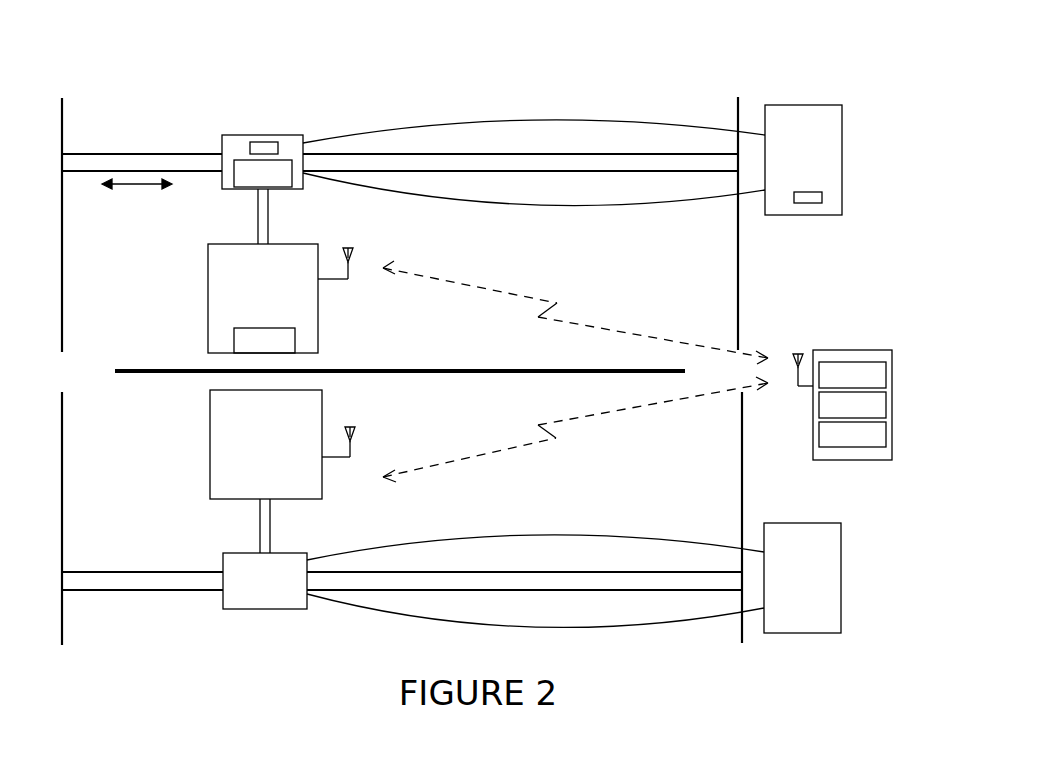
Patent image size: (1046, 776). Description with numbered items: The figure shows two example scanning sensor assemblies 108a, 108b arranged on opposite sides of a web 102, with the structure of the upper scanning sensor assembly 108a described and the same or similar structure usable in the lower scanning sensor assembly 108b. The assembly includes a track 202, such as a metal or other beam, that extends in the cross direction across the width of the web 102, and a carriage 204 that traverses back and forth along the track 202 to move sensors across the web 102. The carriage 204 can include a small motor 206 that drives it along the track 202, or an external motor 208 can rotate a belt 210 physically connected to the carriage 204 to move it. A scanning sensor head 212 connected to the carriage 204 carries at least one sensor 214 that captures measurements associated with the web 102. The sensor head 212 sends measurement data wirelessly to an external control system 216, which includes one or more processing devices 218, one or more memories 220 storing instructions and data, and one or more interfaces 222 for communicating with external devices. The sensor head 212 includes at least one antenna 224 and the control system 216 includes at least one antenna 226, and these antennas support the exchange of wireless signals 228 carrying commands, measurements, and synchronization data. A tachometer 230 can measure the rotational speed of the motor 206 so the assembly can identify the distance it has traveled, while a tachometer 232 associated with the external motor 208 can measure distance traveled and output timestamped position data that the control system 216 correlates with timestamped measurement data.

The web 102 is at (175, 375).
The scanning sensor assembly 108a is at (720, 90).
The scanning sensor assembly 108b is at (238, 638).
The track 202 is at (80, 153).
The carriage 204 is at (297, 133).
The motor 206 is at (263, 173).
The external motor 208 is at (836, 160).
The belt 210 is at (482, 120).
The scanning sensor head 212 is at (245, 309).
The sensor 214 is at (264, 340).
The control system 216 is at (851, 350).
The processing device 218 is at (852, 375).
The memory 220 is at (852, 405).
The interface 222 is at (852, 434).
The antenna 224 is at (342, 283).
The antenna 226 is at (797, 371).
The wireless signals 228 is at (575, 322).
The tachometer 230 is at (263, 142).
The tachometer 232 is at (823, 200).